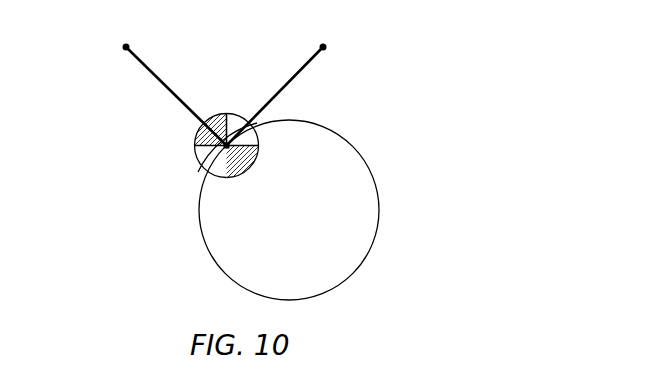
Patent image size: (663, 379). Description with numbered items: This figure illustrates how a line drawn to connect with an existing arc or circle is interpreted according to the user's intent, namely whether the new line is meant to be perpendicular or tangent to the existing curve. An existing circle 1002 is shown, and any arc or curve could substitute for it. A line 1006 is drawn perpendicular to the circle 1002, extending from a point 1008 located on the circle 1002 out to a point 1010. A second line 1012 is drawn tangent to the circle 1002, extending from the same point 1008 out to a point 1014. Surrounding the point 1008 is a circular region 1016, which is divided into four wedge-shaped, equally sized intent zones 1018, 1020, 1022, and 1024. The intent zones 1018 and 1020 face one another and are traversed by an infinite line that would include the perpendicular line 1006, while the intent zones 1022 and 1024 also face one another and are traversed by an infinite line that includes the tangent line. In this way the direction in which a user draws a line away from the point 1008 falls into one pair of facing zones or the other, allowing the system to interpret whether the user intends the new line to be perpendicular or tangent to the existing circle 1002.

The existing circle 1002 is at (380, 208).
The line 1006 is at (154, 72).
The point 1008 is at (226, 146).
The point 1010 is at (126, 47).
The line 1012 is at (292, 78).
The point 1014 is at (323, 47).
The circular region 1016 is at (220, 114).
The intent zone 1018 is at (197, 140).
The intent zone 1020 is at (258, 162).
The intent zone 1022 is at (197, 151).
The intent zone 1024 is at (260, 133).